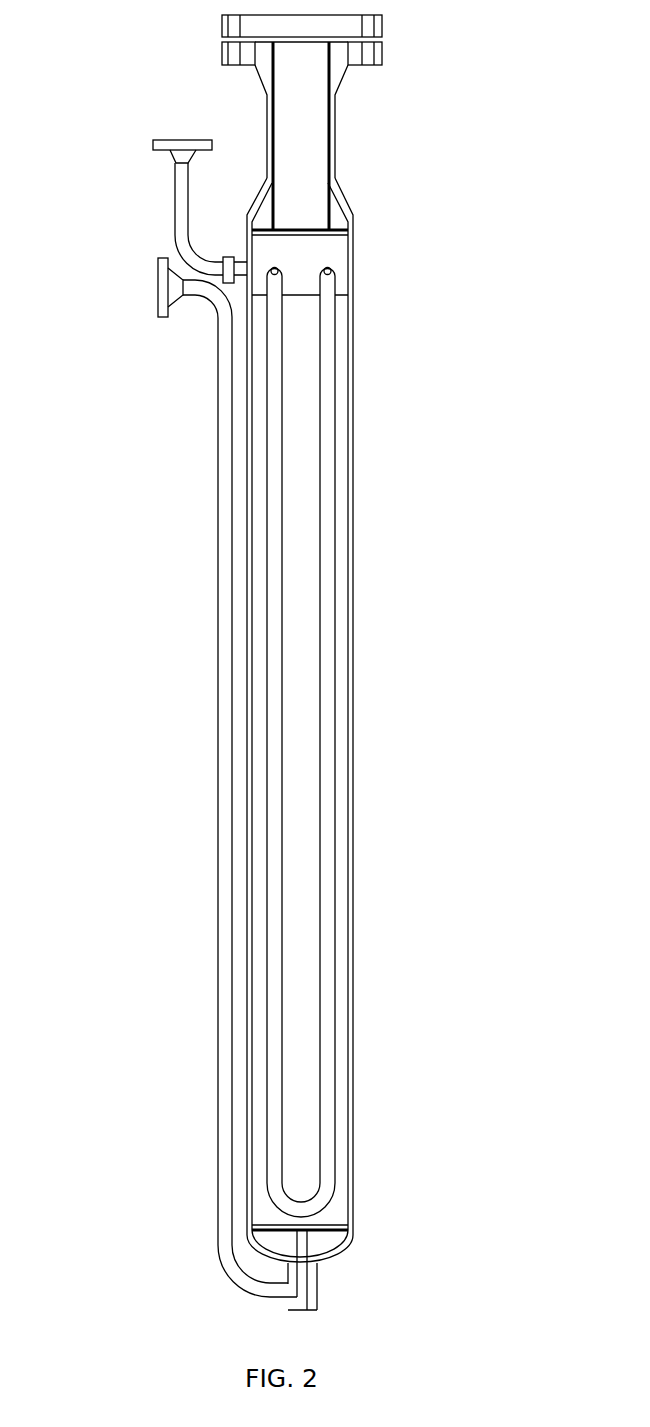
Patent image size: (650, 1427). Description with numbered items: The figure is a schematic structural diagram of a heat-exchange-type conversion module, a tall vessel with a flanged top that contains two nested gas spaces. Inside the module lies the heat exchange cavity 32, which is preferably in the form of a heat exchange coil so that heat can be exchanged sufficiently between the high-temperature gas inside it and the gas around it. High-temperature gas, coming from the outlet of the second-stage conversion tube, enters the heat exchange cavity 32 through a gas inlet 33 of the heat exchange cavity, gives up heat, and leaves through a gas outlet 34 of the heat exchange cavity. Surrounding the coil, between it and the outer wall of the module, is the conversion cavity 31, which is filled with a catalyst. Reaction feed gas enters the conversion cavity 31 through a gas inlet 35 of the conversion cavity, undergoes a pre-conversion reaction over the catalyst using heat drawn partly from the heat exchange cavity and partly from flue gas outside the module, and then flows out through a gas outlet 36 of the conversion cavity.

The conversion cavity 31 is at (338, 480).
The heat exchange cavity 32 is at (330, 396).
The gas inlet of the heat exchange cavity 33 is at (283, 268).
The gas outlet of the heat exchange cavity 34 is at (334, 268).
The gas inlet of the conversion cavity 35 is at (178, 143).
The gas outlet of the conversion cavity 36 is at (158, 290).